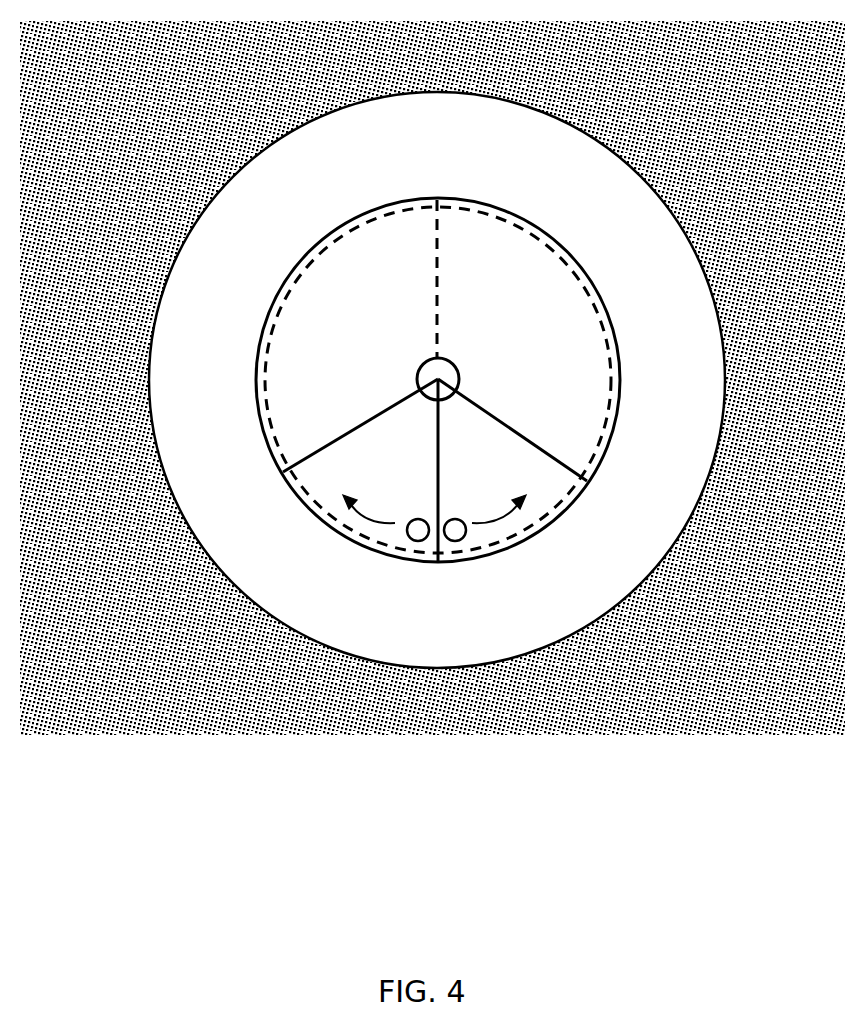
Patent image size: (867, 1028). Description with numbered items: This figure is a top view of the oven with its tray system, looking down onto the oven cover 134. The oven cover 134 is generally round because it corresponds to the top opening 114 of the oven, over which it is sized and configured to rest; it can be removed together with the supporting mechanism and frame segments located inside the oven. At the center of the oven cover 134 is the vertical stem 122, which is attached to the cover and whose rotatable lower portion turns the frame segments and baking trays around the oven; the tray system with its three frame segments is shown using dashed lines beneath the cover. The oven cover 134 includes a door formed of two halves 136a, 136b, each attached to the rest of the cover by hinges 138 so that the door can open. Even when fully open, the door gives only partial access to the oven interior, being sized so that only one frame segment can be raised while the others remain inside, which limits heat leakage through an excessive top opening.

The top opening 114 is at (385, 200).
The oven cover 134 is at (513, 307).
The vertical stem 122 is at (420, 369).
The hinges 138 is at (357, 428).
The first door half 136a is at (332, 472).
The second door half 136b is at (548, 473).